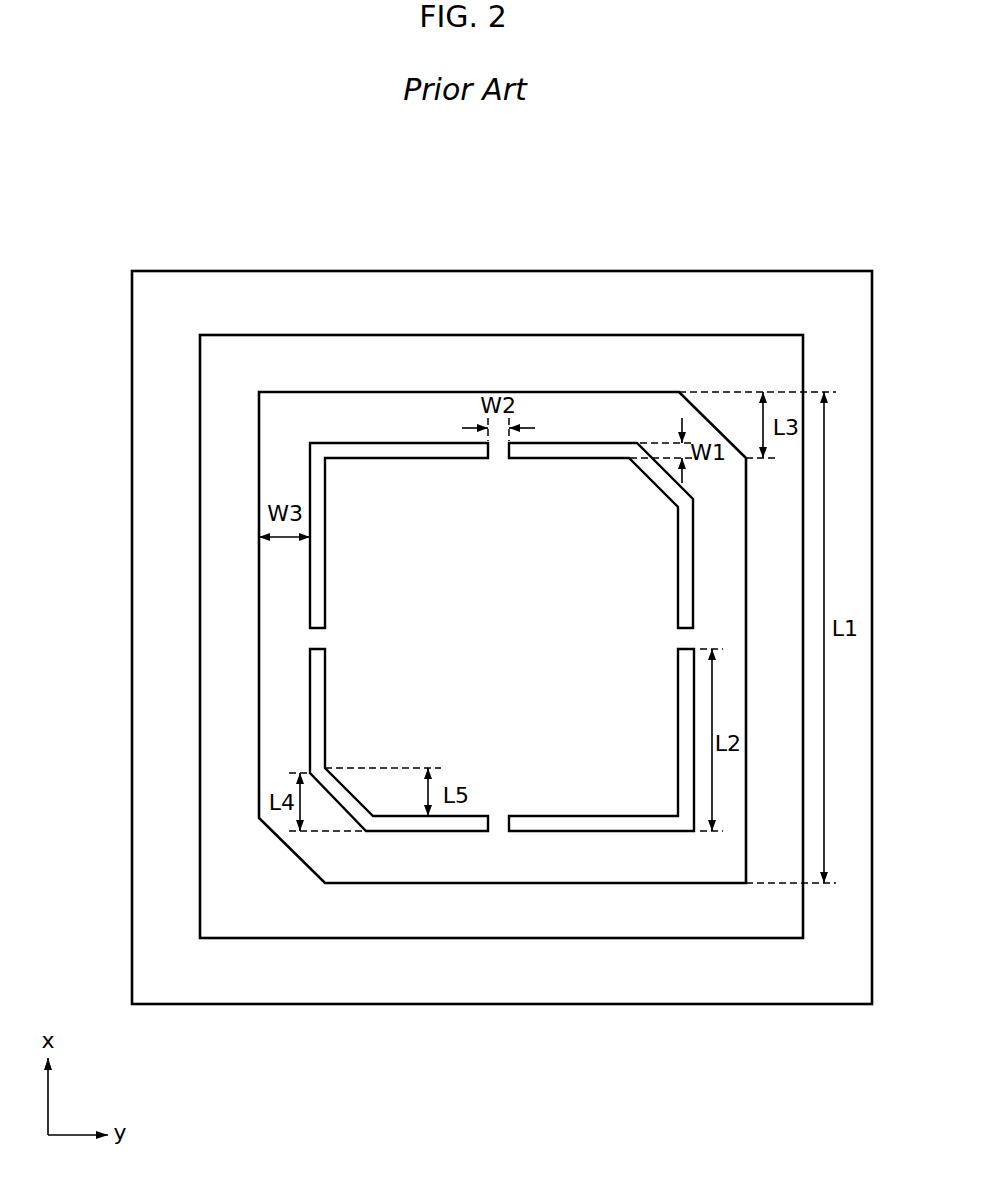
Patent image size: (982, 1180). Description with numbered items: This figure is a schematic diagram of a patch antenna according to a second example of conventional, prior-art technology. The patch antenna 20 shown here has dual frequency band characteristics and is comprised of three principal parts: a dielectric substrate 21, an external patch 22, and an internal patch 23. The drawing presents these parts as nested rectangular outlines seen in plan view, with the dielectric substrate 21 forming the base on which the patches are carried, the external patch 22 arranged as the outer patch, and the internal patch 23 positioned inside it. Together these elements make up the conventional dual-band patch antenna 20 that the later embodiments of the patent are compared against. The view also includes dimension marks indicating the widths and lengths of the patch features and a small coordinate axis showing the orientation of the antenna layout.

The patch antenna 20 is at (486, 188).
The dielectric substrate 21 is at (529, 922).
The external patch 22 is at (642, 870).
The internal patch 23 is at (775, 964).